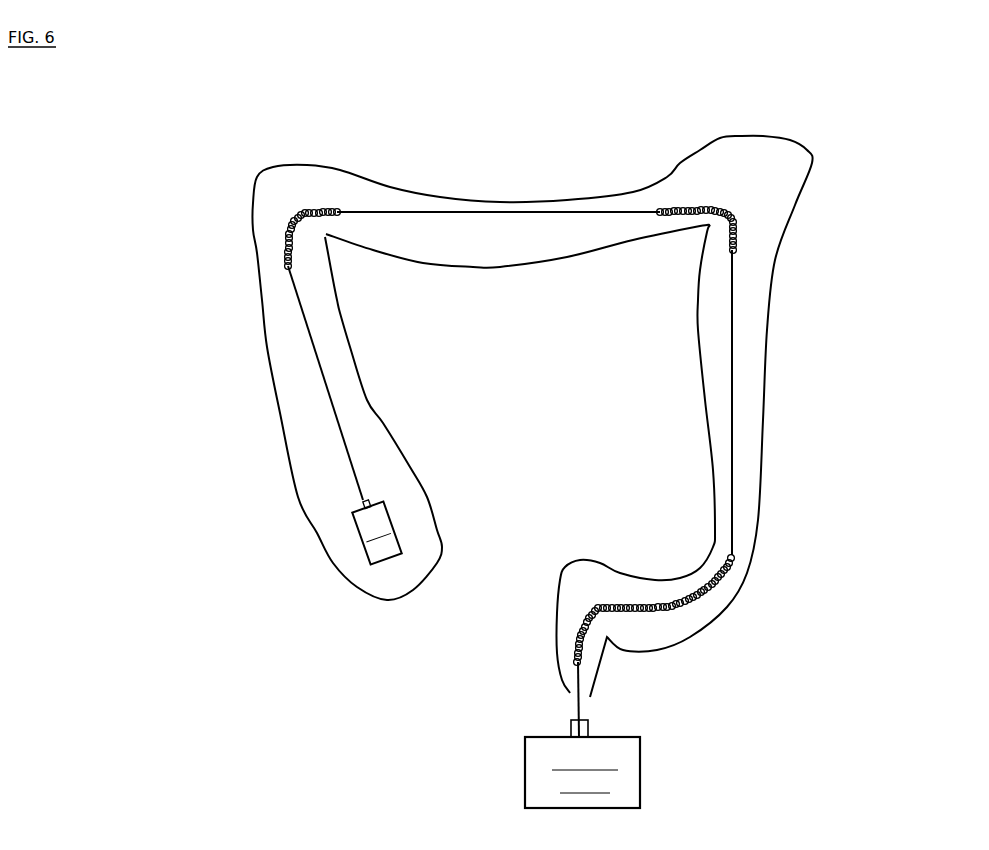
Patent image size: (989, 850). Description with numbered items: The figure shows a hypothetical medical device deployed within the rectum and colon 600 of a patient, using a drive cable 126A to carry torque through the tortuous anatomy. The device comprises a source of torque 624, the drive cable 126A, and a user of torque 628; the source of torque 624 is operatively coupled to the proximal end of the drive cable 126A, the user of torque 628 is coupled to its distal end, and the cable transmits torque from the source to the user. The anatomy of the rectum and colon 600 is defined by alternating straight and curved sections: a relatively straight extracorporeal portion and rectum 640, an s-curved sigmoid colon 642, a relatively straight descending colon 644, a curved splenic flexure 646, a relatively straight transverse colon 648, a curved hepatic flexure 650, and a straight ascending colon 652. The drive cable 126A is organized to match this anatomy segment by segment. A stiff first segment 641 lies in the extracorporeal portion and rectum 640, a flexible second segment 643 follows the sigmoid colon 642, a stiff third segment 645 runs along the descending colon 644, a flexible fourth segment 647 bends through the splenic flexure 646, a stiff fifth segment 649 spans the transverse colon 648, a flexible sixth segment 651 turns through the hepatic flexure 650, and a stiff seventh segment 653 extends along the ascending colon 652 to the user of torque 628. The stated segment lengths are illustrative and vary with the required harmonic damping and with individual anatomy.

The rectum and colon 600 is at (312, 85).
The hepatic flexure 650 is at (285, 167).
The flexible drive cable segment 651 is at (278, 233).
The ascending colon 652 is at (367, 400).
The user of torque 628 is at (383, 563).
The stiff drive cable segment 653 is at (245, 388).
The stiff drive cable segment 649 is at (450, 212).
The transverse colon 648 is at (483, 267).
The descending colon 644 is at (700, 373).
The stiff drive cable segment 645 is at (735, 408).
The drive cable 126A is at (748, 467).
The flexible drive cable segment 643 is at (782, 590).
The splenic flexure 646 is at (790, 140).
The flexible drive cable segment 647 is at (813, 190).
The sigmoid colon 642 is at (600, 562).
The extracorporeal portion and rectum 640 is at (557, 667).
The stiff drive cable segment 641 is at (582, 705).
The source of torque 624 is at (523, 772).